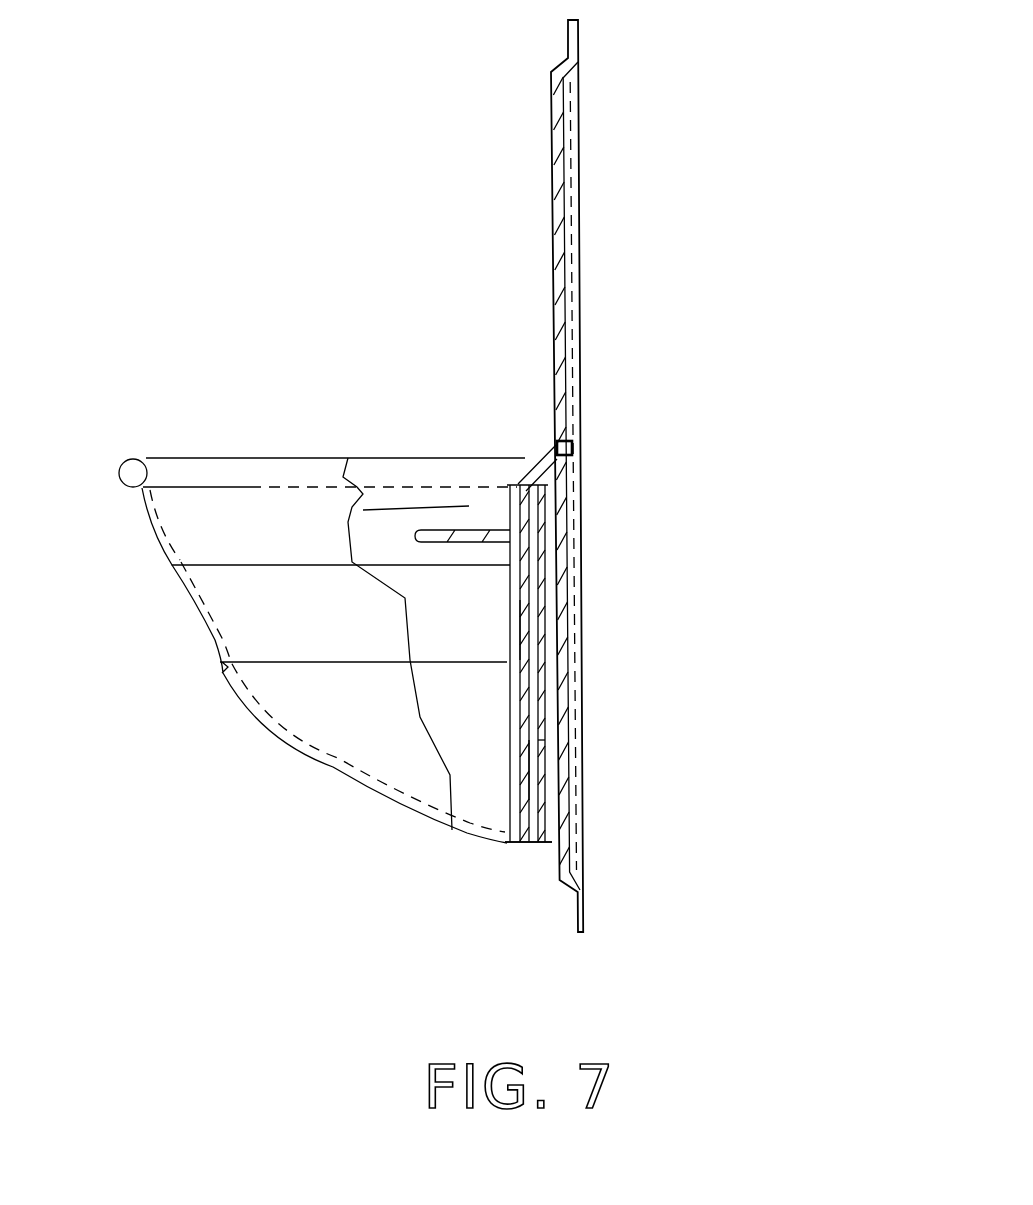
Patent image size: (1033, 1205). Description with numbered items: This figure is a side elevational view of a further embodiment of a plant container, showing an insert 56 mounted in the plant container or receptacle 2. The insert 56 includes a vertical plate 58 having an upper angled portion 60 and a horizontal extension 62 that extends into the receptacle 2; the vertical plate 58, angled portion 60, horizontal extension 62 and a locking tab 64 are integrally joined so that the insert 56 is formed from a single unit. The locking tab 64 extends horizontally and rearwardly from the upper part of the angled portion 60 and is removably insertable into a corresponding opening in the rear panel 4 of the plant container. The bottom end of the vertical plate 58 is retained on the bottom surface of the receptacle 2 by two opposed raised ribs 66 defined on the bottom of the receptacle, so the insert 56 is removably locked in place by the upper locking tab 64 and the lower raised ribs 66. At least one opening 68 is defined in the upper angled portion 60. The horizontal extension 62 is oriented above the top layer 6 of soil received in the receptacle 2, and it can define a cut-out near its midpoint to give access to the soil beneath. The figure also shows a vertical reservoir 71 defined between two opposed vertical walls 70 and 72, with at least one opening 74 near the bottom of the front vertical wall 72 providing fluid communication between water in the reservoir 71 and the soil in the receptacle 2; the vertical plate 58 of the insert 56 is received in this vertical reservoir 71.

The plant container or receptacle 2 is at (210, 631).
The rear panel 4 is at (560, 503).
The top layer of soil 6 is at (255, 556).
The insert 56 is at (517, 766).
The vertical plate 58 is at (530, 707).
The upper angled portion 60 is at (545, 443).
The horizontal extension 62 is at (492, 525).
The locking tab 64 is at (572, 440).
The raised ribs 66 is at (527, 833).
The opening 68 is at (520, 445).
The vertical wall 70 is at (553, 621).
The vertical reservoir 71 is at (538, 589).
The front vertical wall 72 is at (520, 632).
The opening 74 is at (507, 787).